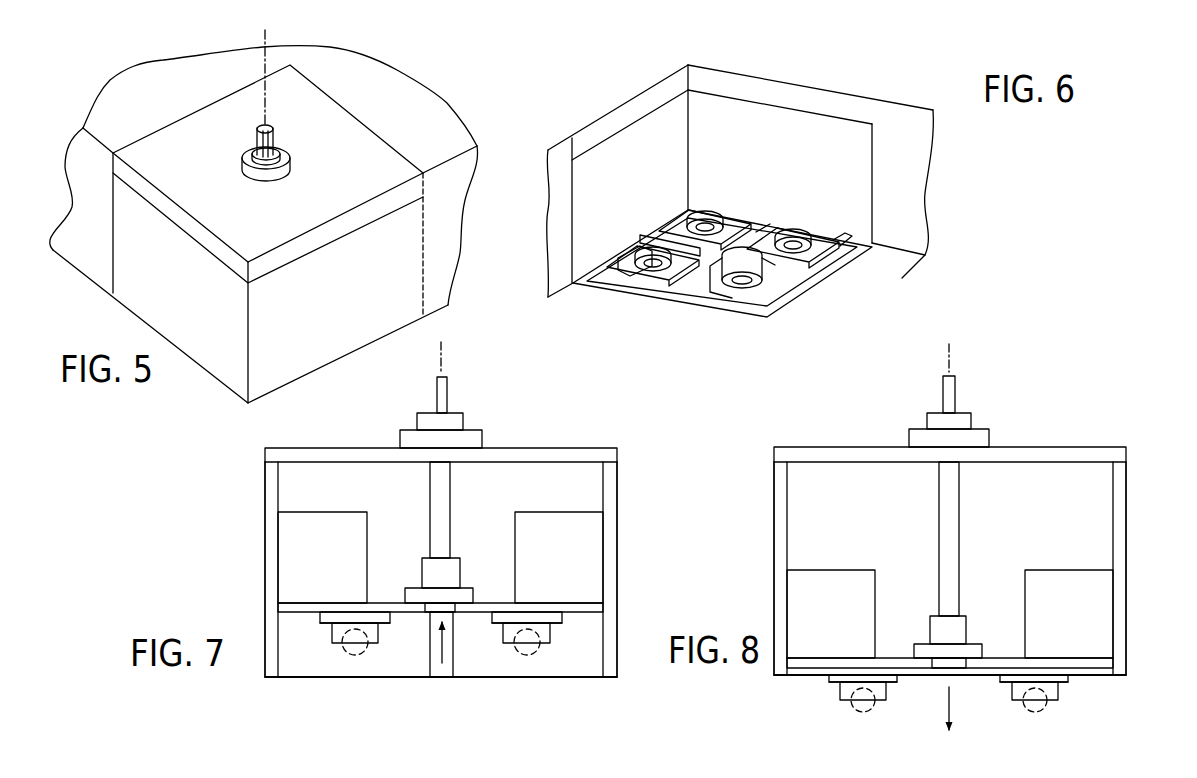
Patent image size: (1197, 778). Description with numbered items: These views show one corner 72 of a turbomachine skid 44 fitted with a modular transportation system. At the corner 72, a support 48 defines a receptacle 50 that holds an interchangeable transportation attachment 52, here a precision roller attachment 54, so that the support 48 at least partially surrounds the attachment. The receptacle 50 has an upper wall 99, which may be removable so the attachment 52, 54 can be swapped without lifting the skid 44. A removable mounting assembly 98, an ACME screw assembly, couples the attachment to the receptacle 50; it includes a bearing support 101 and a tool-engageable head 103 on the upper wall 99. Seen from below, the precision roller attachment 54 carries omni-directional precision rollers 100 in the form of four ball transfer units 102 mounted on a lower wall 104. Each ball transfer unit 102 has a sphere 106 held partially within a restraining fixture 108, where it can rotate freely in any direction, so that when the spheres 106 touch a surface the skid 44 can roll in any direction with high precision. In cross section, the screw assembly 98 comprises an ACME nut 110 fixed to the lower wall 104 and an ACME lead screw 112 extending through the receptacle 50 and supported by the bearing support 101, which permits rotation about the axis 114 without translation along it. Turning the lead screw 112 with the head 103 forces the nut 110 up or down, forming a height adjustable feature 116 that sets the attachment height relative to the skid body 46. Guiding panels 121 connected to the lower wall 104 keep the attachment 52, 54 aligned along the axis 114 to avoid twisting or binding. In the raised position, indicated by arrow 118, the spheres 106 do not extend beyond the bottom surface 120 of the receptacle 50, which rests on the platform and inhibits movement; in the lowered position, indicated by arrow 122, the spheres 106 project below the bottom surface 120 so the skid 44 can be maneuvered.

In FIG. 5, the skid 44 is at (92, 84).
In FIG. 6, the skid 44 is at (940, 158).
In FIG. 7, the skid 44 is at (240, 492).
In FIG. 8, the skid 44 is at (749, 459).
In FIG. 5, the skid body 46 is at (448, 190).
In FIG. 6, the skid body 46 is at (910, 117).
In FIG. 7, the skid body 46 is at (620, 477).
In FIG. 8, the skid body 46 is at (1126, 477).
In FIG. 5, the support 48 is at (135, 283).
In FIG. 6, the support 48 is at (636, 138).
In FIG. 7, the support 48 is at (223, 542).
In FIG. 8, the support 48 is at (1137, 618).
In FIG. 5, the receptacle 50 is at (137, 320).
In FIG. 6, the receptacle 50 is at (592, 292).
In FIG. 7, the receptacle 50 is at (278, 533).
In FIG. 8, the receptacle 50 is at (1114, 552).
In FIG. 5, the transportation attachment 52 is at (250, 337).
In FIG. 6, the transportation attachment 52 is at (777, 263).
In FIG. 7, the transportation attachment 52 is at (441, 712).
In FIG. 8, the transportation attachment 52 is at (950, 716).
In FIG. 5, the precision roller attachment 54 is at (215, 380).
In FIG. 6, the precision roller attachment 54 is at (862, 275).
In FIG. 7, the precision roller attachment 54 is at (473, 706).
In FIG. 8, the precision roller attachment 54 is at (975, 714).
In FIG. 5, the corner 72 is at (397, 92).
In FIG. 6, the corner 72 is at (657, 98).
In FIG. 7, the corner 72 is at (618, 558).
In FIG. 8, the corner 72 is at (774, 530).
In FIG. 5, the mounting assembly 98 is at (274, 125).
In FIG. 7, the mounting assembly 98 is at (442, 445).
In FIG. 8, the mounting assembly 98 is at (950, 473).
In FIG. 5, the upper wall 99 is at (167, 140).
In FIG. 6, the upper wall 99 is at (810, 88).
In FIG. 7, the upper wall 99 is at (530, 447).
In FIG. 8, the upper wall 99 is at (1037, 445).
In FIG. 6, the omni-directional precision rollers 100 is at (700, 209).
In FIG. 7, the omni-directional precision rollers 100 is at (315, 636).
In FIG. 8, the omni-directional precision rollers 100 is at (831, 696).
In FIG. 5, the bearing support 101 is at (287, 165).
In FIG. 7, the bearing support 101 is at (482, 429).
In FIG. 8, the bearing support 101 is at (987, 429).
In FIG. 6, the ball transfer units 102 is at (733, 211).
In FIG. 7, the ball transfer units 102 is at (367, 662).
In FIG. 8, the ball transfer units 102 is at (877, 714).
In FIG. 5, the tool-engageable head 103 is at (277, 137).
In FIG. 7, the tool-engageable head 103 is at (437, 394).
In FIG. 8, the tool-engageable head 103 is at (943, 394).
In FIG. 6, the lower wall 104 is at (685, 243).
In FIG. 7, the lower wall 104 is at (490, 603).
In FIG. 8, the lower wall 104 is at (1002, 657).
In FIG. 6, the sphere 106 is at (707, 228).
In FIG. 7, the sphere 106 is at (355, 655).
In FIG. 8, the sphere 106 is at (863, 712).
In FIG. 6, the restraining fixture 108 is at (688, 223).
In FIG. 7, the restraining fixture 108 is at (378, 633).
In FIG. 8, the restraining fixture 108 is at (888, 690).
In FIG. 7, the ACME nut 110 is at (423, 575).
In FIG. 8, the ACME nut 110 is at (930, 626).
In FIG. 7, the ACME lead screw 112 is at (443, 520).
In FIG. 8, the ACME lead screw 112 is at (952, 577).
In FIG. 5, the axis 114 is at (263, 42).
In FIG. 7, the axis 114 is at (443, 364).
In FIG. 8, the axis 114 is at (952, 361).
In FIG. 7, the height adjustable feature 116 is at (462, 527).
In FIG. 8, the height adjustable feature 116 is at (971, 589).
In FIG. 7, the arrow 118 is at (438, 657).
In FIG. 7, the bottom surface 120 is at (590, 677).
In FIG. 8, the bottom surface 120 is at (1097, 677).
In FIG. 7, the guiding panels 121 is at (298, 578).
In FIG. 8, the guiding panels 121 is at (797, 598).
In FIG. 8, the arrow 122 is at (967, 705).